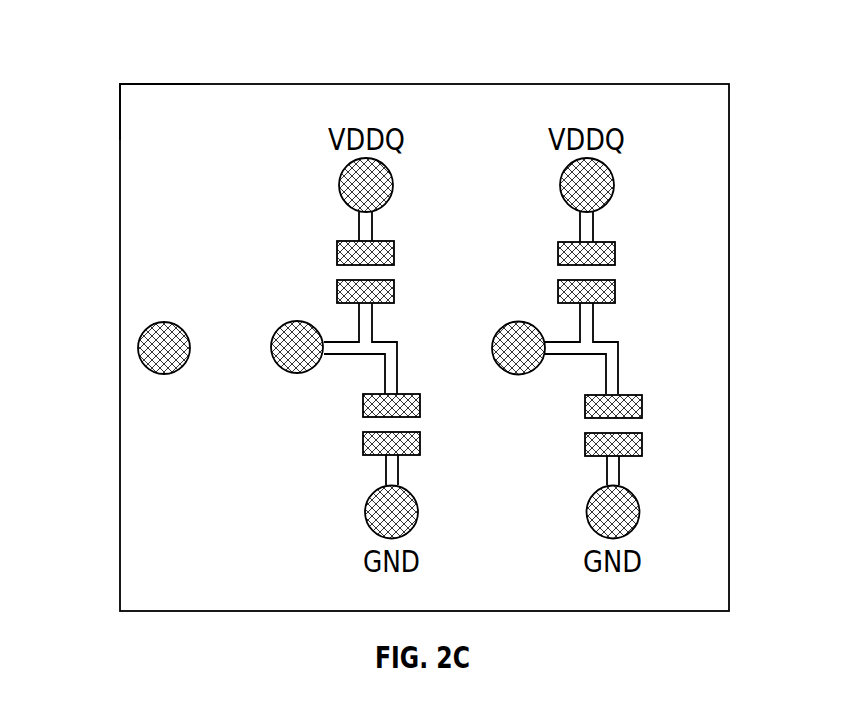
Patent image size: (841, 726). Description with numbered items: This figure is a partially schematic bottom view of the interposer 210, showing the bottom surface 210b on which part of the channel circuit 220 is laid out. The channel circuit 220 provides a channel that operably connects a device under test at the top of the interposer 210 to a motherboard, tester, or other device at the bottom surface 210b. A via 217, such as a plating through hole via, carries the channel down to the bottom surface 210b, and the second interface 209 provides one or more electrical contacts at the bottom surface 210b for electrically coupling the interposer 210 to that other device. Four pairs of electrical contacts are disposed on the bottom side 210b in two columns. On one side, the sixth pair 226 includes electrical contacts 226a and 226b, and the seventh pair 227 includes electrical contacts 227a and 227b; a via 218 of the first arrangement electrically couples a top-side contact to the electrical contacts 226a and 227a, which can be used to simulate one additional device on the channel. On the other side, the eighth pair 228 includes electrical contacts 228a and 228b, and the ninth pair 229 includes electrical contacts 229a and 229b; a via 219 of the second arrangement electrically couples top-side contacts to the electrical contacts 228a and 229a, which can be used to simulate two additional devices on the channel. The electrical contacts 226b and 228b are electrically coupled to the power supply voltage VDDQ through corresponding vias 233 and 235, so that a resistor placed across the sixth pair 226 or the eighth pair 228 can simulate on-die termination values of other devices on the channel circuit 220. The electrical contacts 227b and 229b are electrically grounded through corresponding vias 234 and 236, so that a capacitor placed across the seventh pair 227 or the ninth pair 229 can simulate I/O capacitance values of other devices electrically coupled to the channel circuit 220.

The interposer 210 is at (665, 83).
The bottom surface 210b is at (157, 100).
The second interface 209 is at (136, 374).
The via 217 is at (138, 347).
The via 218 is at (271, 348).
The via 219 is at (492, 348).
The channel circuit 220 is at (680, 207).
The sixth pair 226 is at (394, 297).
The electrical contact 226a is at (337, 293).
The electrical contact 226b is at (337, 252).
The seventh pair 227 is at (420, 410).
The electrical contact 227a is at (363, 405).
The electrical contact 227b is at (363, 443).
The eighth pair 228 is at (615, 255).
The electrical contact 228a is at (558, 293).
The electrical contact 228b is at (558, 252).
The ninth pair 229 is at (642, 405).
The electrical contact 229a is at (585, 405).
The electrical contact 229b is at (585, 443).
The via 233 is at (340, 183).
The via 234 is at (365, 510).
The via 235 is at (562, 183).
The via 236 is at (587, 510).